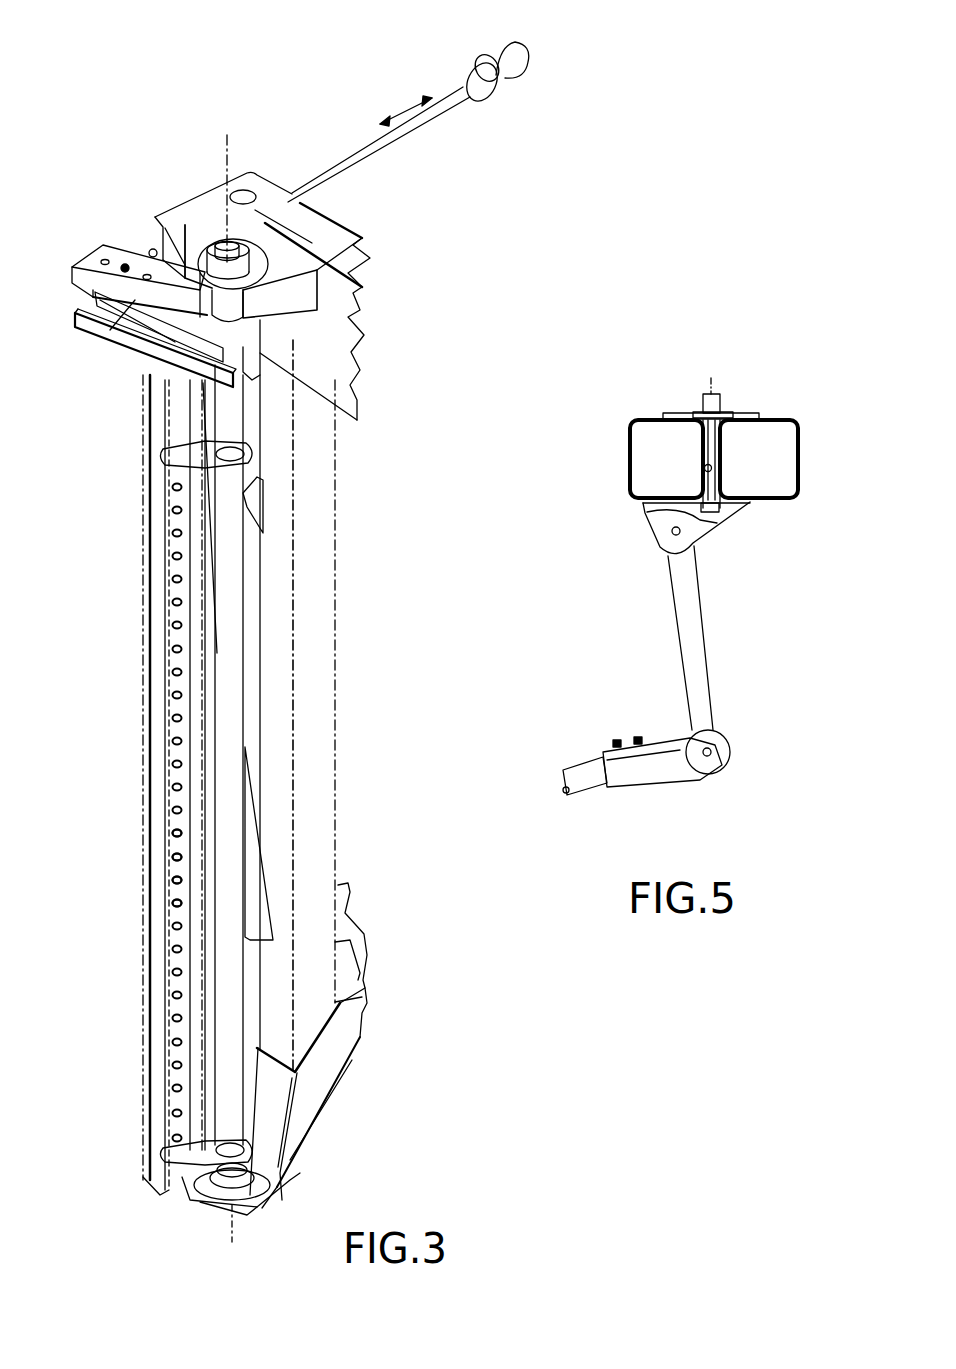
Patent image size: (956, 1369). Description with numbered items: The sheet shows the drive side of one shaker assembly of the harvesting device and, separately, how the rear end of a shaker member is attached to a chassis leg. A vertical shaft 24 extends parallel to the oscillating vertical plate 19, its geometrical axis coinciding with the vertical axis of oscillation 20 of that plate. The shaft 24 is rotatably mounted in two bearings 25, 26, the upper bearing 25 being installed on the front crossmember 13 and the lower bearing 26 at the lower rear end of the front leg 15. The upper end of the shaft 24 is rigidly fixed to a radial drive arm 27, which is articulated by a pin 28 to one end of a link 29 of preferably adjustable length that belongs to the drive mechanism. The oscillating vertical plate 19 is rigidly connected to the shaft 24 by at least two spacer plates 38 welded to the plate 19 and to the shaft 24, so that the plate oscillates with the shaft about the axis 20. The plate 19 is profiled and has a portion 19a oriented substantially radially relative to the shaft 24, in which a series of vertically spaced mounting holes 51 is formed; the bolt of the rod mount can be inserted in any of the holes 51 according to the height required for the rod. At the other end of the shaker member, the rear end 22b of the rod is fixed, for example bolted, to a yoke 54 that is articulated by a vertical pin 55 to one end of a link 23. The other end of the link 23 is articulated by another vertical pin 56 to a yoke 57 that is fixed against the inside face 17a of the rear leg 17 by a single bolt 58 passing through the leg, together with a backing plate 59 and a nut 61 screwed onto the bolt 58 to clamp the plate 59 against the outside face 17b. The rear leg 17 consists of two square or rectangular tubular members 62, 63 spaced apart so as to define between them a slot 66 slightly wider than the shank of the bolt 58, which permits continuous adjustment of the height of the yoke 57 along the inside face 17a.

In FIG. 3, the front crossmember 13 is at (343, 327).
In FIG. 3, the front leg 15 is at (323, 702).
In FIG. 5, the rear leg 17 is at (707, 455).
In FIG. 5, the inside face of the rear leg 17a is at (770, 500).
In FIG. 5, the outside face of the rear leg 17b is at (773, 420).
In FIG. 3, the oscillating vertical plate 19 is at (148, 708).
In FIG. 3, the radially oriented portion of the oscillating vertical plate 19a is at (177, 750).
In FIG. 3, the vertical axis of oscillation 20 is at (232, 1238).
In FIG. 5, the rear end of the rod 22b is at (570, 768).
In FIG. 5, the link 23 is at (690, 635).
In FIG. 3, the vertical shaft 24 is at (228, 613).
In FIG. 3, the bearing 25 is at (214, 252).
In FIG. 3, the bearing 26 is at (200, 1203).
In FIG. 3, the radial drive arm 27 is at (130, 348).
In FIG. 3, the pin 28 is at (126, 258).
In FIG. 3, the link 29 is at (357, 160).
In FIG. 3, the spacer plate 38 is at (193, 447).
In FIG. 3, the mounting holes 51 is at (172, 833).
In FIG. 5, the yoke 54 is at (680, 768).
In FIG. 5, the vertical pin 55 is at (717, 747).
In FIG. 5, the vertical pin 56 is at (673, 532).
In FIG. 5, the yoke 57 is at (703, 532).
In FIG. 5, the bolt 58 is at (717, 513).
In FIG. 5, the backing plate 59 is at (683, 415).
In FIG. 5, the nut 61 is at (720, 405).
In FIG. 5, the tubular member 62 is at (628, 437).
In FIG. 5, the tubular member 63 is at (798, 455).
In FIG. 5, the slot 66 is at (703, 476).